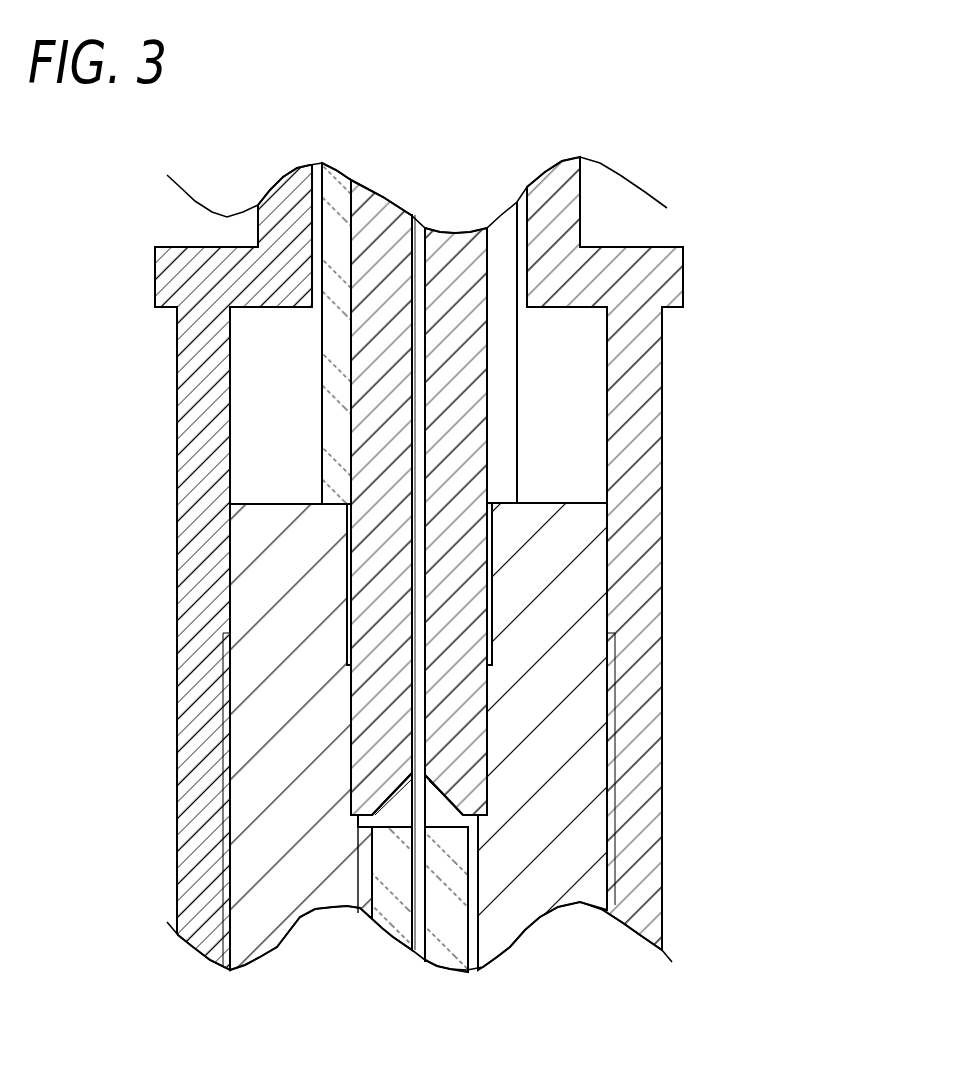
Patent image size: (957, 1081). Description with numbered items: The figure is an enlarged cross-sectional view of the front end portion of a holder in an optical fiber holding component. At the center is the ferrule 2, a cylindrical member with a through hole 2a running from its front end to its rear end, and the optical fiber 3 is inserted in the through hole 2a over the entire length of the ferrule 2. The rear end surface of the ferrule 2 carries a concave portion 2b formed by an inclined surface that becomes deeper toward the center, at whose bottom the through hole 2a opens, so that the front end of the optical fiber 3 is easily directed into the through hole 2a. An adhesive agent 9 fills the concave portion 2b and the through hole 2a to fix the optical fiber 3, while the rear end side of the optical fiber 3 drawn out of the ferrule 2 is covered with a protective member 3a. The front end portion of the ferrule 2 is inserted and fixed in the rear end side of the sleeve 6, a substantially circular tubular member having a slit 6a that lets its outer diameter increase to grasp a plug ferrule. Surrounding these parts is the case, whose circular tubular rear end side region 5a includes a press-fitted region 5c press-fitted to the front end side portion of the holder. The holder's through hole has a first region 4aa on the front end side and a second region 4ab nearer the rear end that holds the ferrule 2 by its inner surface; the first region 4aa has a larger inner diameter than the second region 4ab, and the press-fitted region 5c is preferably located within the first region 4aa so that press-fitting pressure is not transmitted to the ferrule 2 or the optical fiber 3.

The ferrule 2 is at (470, 700).
The through hole 2a is at (430, 511).
The concave portion 2b is at (455, 803).
The optical fiber 3 is at (420, 593).
The protective member 3a is at (455, 927).
The first region 4aa is at (347, 643).
The second region 4ab is at (352, 762).
The rear end side region 5a is at (188, 350).
The press-fitted region 5c is at (140, 505).
The sleeve 6 is at (335, 450).
The slit 6a is at (497, 375).
The adhesive agent 9 is at (400, 812).